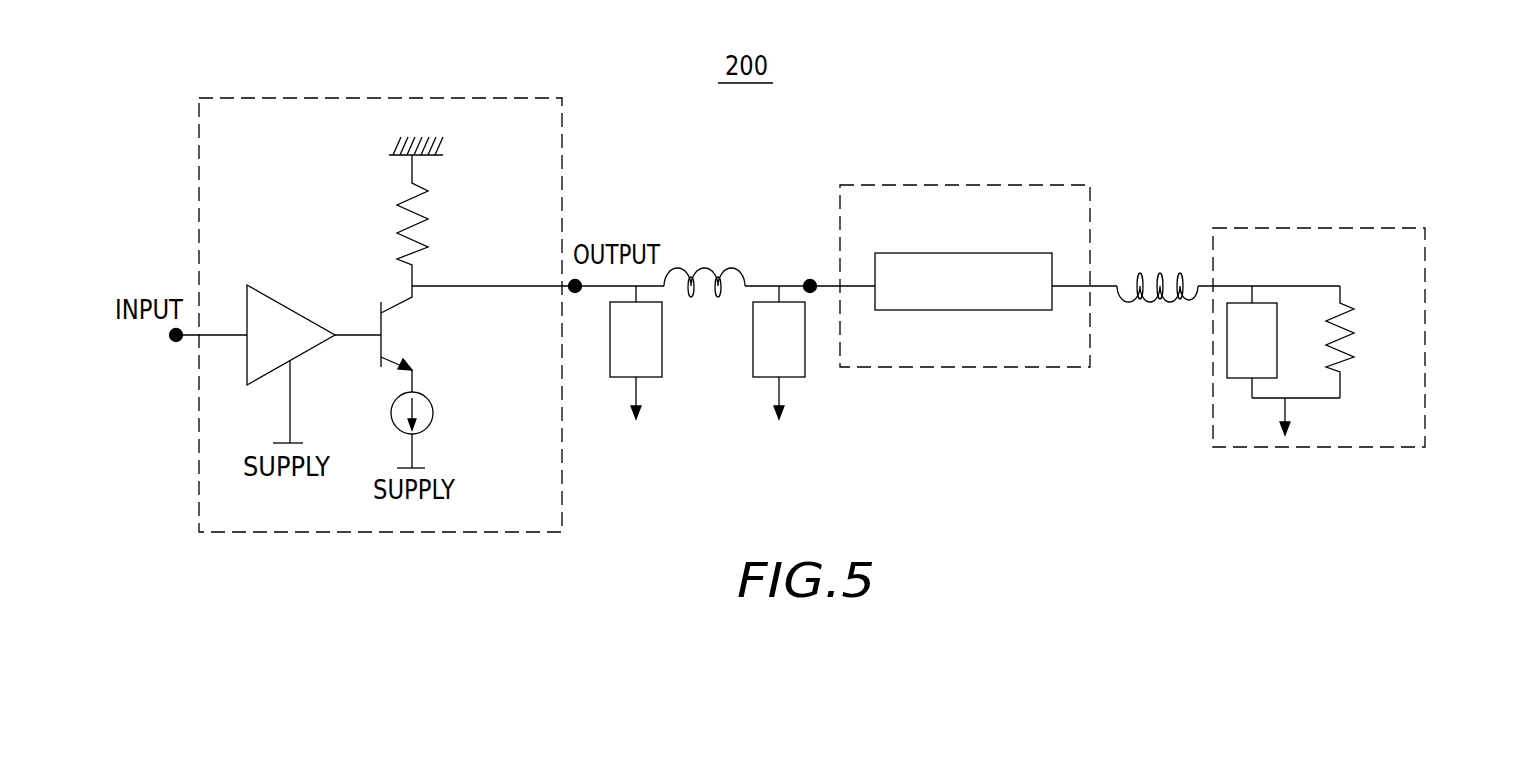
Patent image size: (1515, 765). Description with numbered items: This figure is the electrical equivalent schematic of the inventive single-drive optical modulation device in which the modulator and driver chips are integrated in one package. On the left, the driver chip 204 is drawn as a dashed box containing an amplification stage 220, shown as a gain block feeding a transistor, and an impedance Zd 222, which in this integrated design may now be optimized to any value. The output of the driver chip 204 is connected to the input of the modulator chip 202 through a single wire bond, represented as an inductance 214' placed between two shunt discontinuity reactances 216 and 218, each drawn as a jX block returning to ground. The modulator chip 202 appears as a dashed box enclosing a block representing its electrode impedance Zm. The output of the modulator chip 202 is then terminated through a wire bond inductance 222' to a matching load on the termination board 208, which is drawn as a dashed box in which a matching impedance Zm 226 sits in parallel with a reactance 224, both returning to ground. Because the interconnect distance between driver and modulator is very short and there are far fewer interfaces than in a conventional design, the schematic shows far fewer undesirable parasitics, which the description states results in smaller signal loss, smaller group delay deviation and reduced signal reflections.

The modulator chip 202 is at (938, 185).
The driver chip 204 is at (316, 98).
The termination board 208 is at (1358, 228).
The inductance 214' is at (694, 242).
The discontinuity reactance 216 is at (617, 377).
The discontinuity reactance 218 is at (800, 377).
The amplification stage 220 is at (286, 303).
The impedance Zd 222 is at (396, 211).
The wire bond inductance 222' is at (1162, 231).
The reactance 224 is at (433, 413).
The matching impedance Zm 226 is at (1345, 304).